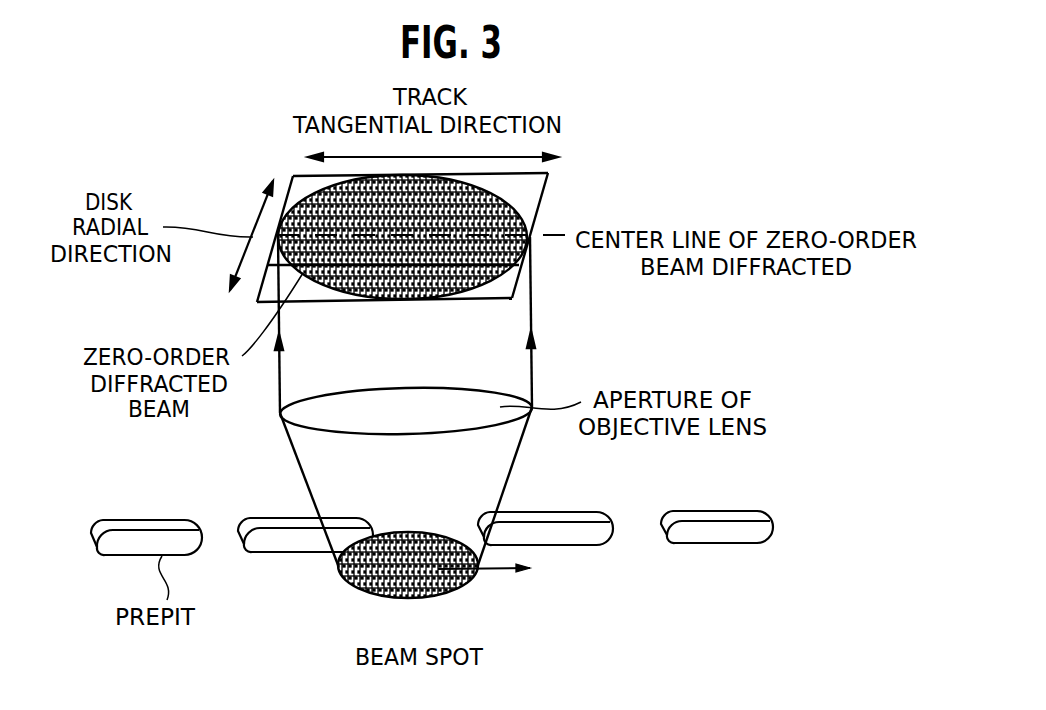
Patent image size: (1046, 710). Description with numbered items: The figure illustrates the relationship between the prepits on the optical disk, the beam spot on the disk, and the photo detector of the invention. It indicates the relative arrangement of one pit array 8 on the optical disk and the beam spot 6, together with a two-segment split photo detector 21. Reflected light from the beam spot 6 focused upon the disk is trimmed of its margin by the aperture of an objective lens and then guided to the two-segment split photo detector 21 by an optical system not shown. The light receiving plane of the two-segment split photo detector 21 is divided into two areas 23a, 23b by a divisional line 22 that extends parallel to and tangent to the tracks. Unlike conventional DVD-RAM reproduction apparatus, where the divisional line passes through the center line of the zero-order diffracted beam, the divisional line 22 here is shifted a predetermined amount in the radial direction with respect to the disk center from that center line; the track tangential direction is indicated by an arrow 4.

The two-segment split photo detector 21 is at (548, 194).
The divisional line 22 is at (468, 265).
The area 23a is at (272, 286).
The area 23b is at (305, 192).
The track direction 4 is at (495, 572).
The beam spot 6 is at (352, 585).
The pit array 8 is at (572, 545).